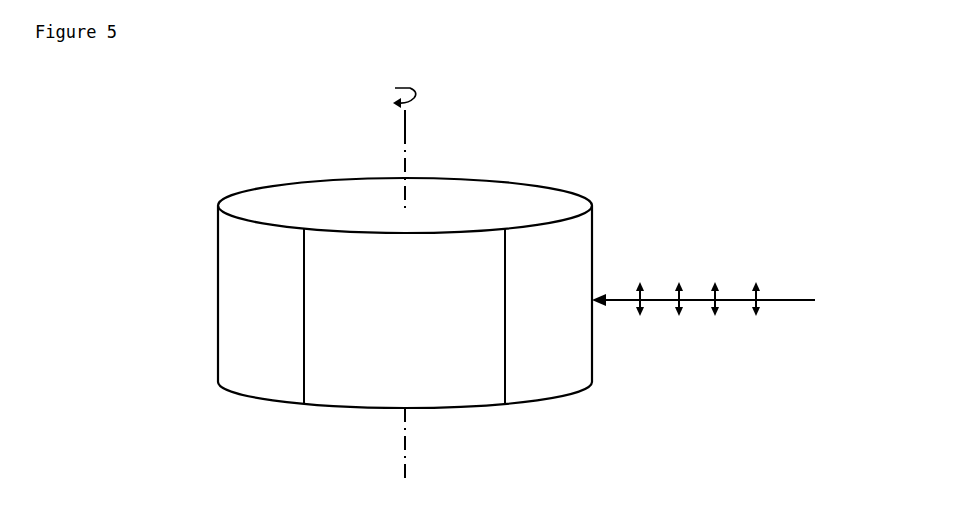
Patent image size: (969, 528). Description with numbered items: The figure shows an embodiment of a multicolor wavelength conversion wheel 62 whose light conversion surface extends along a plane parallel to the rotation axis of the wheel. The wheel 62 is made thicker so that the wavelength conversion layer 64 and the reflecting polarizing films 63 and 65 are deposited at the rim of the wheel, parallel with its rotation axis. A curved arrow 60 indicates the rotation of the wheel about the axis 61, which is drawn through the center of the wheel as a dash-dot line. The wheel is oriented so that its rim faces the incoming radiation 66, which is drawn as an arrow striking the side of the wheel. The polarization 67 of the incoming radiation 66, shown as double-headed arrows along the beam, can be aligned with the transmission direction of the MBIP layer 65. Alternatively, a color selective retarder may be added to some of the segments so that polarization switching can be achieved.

The rotation direction arrow 60 is at (412, 93).
The rotation axis 61 is at (408, 118).
The wavelength conversion wheel 62 is at (503, 184).
The reflecting polarizing film 63 is at (224, 312).
The wavelength conversion layer 64 is at (400, 394).
The reflecting polarizing film (MBIP layer) 65 is at (570, 263).
The incoming radiation 66 is at (779, 300).
The polarization of the incoming radiation 67 is at (639, 286).